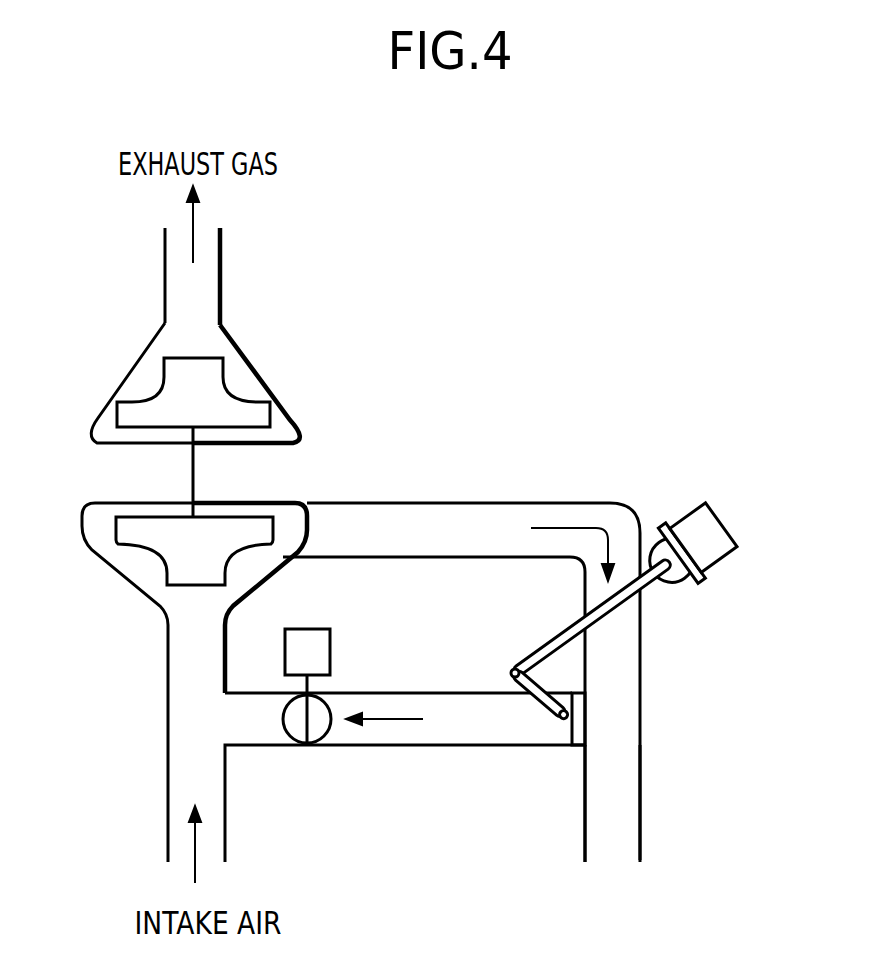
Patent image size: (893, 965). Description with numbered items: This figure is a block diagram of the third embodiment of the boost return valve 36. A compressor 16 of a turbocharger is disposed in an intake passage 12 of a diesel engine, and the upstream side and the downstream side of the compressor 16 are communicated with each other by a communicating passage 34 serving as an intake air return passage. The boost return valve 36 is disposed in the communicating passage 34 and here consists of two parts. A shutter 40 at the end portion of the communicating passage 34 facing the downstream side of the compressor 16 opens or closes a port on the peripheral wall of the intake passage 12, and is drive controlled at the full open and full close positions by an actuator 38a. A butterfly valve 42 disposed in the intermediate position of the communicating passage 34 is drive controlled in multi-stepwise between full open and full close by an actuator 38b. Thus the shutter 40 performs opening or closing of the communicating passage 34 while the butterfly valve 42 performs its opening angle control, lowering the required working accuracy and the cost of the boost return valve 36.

The intake passage 12 is at (463, 500).
The compressor 16 is at (168, 560).
The communicating passage 34 is at (453, 715).
The boost return valve 36 is at (512, 785).
The actuator 38a is at (728, 517).
The actuator 38b is at (330, 645).
The shutter 40 is at (578, 715).
The butterfly valve 42 is at (287, 732).